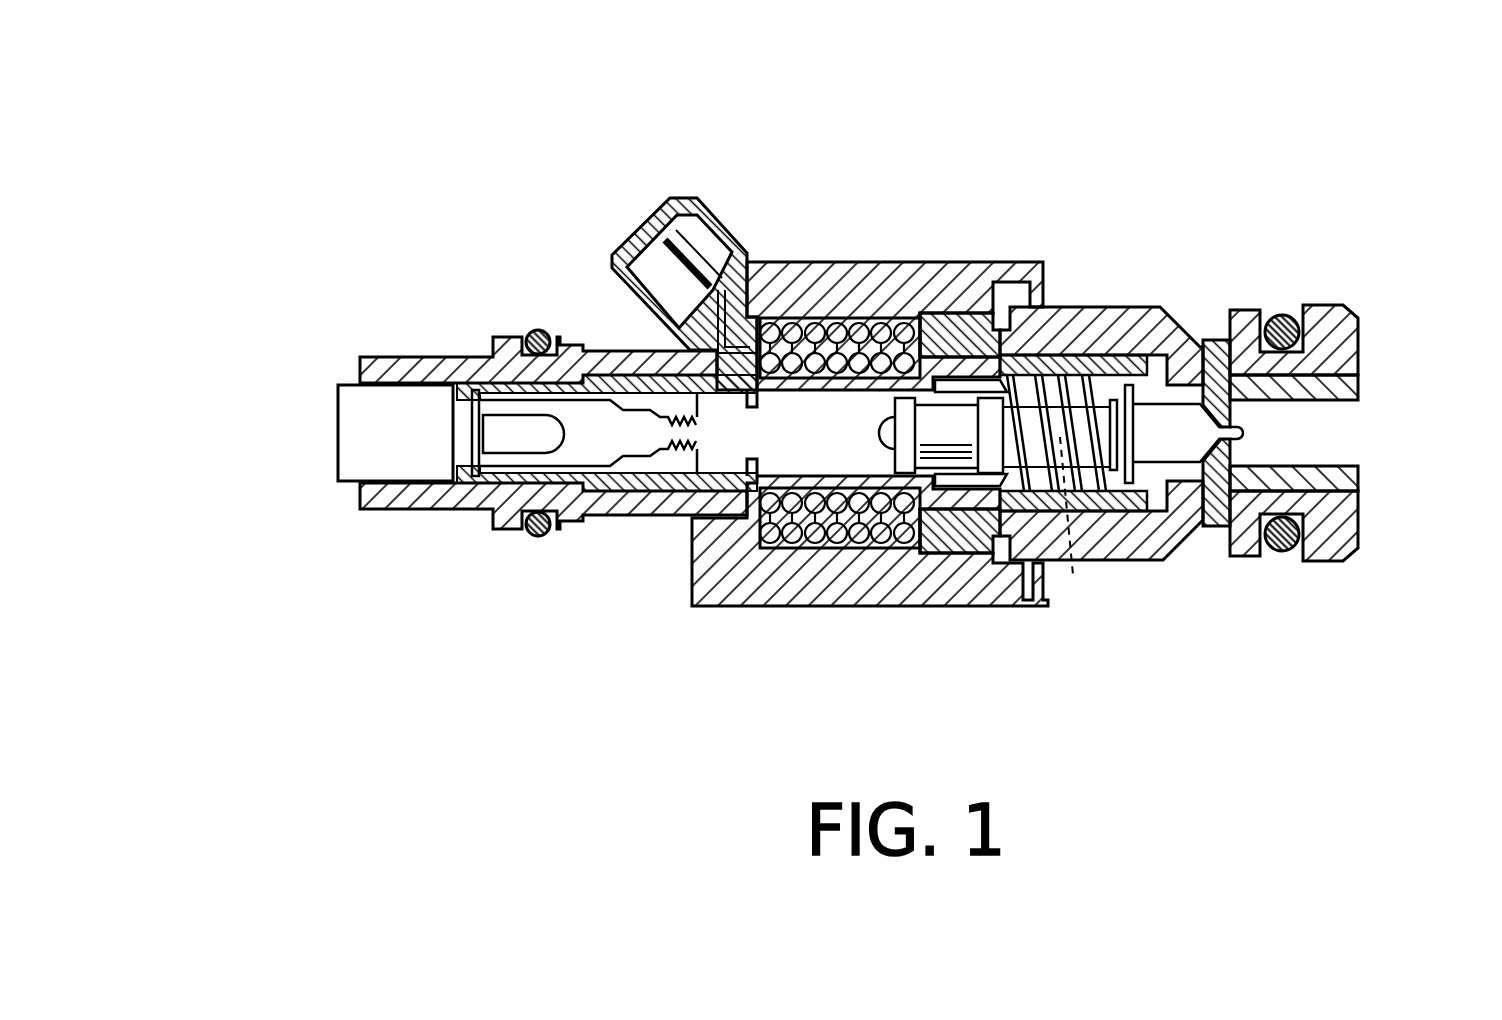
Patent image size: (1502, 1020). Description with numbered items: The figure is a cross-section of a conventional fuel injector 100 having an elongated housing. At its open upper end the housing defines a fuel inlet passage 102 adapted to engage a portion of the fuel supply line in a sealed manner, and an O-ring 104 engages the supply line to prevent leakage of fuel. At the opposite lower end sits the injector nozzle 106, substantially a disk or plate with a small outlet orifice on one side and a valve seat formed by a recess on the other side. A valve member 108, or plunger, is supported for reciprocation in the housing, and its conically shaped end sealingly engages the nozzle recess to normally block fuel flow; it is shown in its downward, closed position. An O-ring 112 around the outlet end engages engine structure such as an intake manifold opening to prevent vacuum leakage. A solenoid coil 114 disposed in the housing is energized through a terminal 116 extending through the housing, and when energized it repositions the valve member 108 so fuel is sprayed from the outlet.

The fuel injector 100 is at (1163, 192).
The fuel inlet passage 102 is at (298, 441).
The O-ring 104 is at (538, 329).
The injector nozzle 106 is at (1262, 433).
The valve member 108 is at (1168, 442).
The O-ring 112 is at (1288, 312).
The solenoid coil 114 is at (830, 525).
The terminal 116 is at (693, 233).